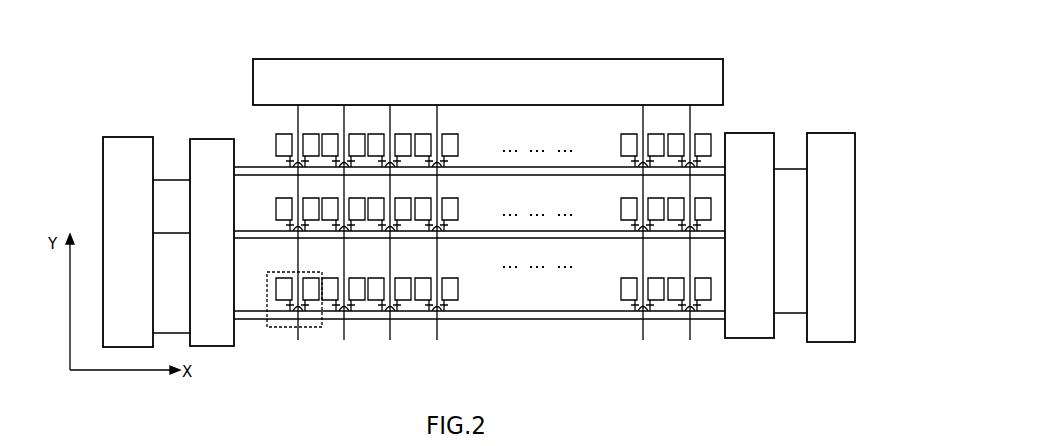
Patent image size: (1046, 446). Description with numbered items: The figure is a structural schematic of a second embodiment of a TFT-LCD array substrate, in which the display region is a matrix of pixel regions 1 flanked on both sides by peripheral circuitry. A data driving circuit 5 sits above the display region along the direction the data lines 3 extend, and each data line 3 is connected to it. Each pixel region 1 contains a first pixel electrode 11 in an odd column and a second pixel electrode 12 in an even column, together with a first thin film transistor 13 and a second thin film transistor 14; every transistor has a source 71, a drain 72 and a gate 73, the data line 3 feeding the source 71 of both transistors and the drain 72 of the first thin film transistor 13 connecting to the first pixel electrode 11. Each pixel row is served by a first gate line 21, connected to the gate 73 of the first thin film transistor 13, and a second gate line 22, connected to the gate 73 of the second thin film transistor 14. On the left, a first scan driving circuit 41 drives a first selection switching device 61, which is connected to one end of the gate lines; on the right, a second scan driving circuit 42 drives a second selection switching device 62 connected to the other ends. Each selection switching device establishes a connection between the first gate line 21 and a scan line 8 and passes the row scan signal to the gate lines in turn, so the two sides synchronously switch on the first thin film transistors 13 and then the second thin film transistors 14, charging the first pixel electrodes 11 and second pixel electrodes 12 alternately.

The pixel region 1 is at (267, 325).
The data line 3 is at (297, 337).
The data driving circuit 5 is at (378, 63).
The scan line 8 is at (177, 179).
The first pixel electrode 11 is at (282, 283).
The second pixel electrode 12 is at (311, 283).
The first thin film transistor 13 is at (291, 303).
The second thin film transistor 14 is at (306, 305).
The first gate line 21 is at (488, 311).
The second gate line 22 is at (525, 319).
The first scan driving circuit 41 is at (138, 147).
The second scan driving circuit 42 is at (820, 133).
The first selection switching device 61 is at (220, 148).
The second selection switching device 62 is at (735, 133).
The source 71 is at (440, 312).
The drain 72 is at (428, 303).
The gate 73 is at (438, 304).